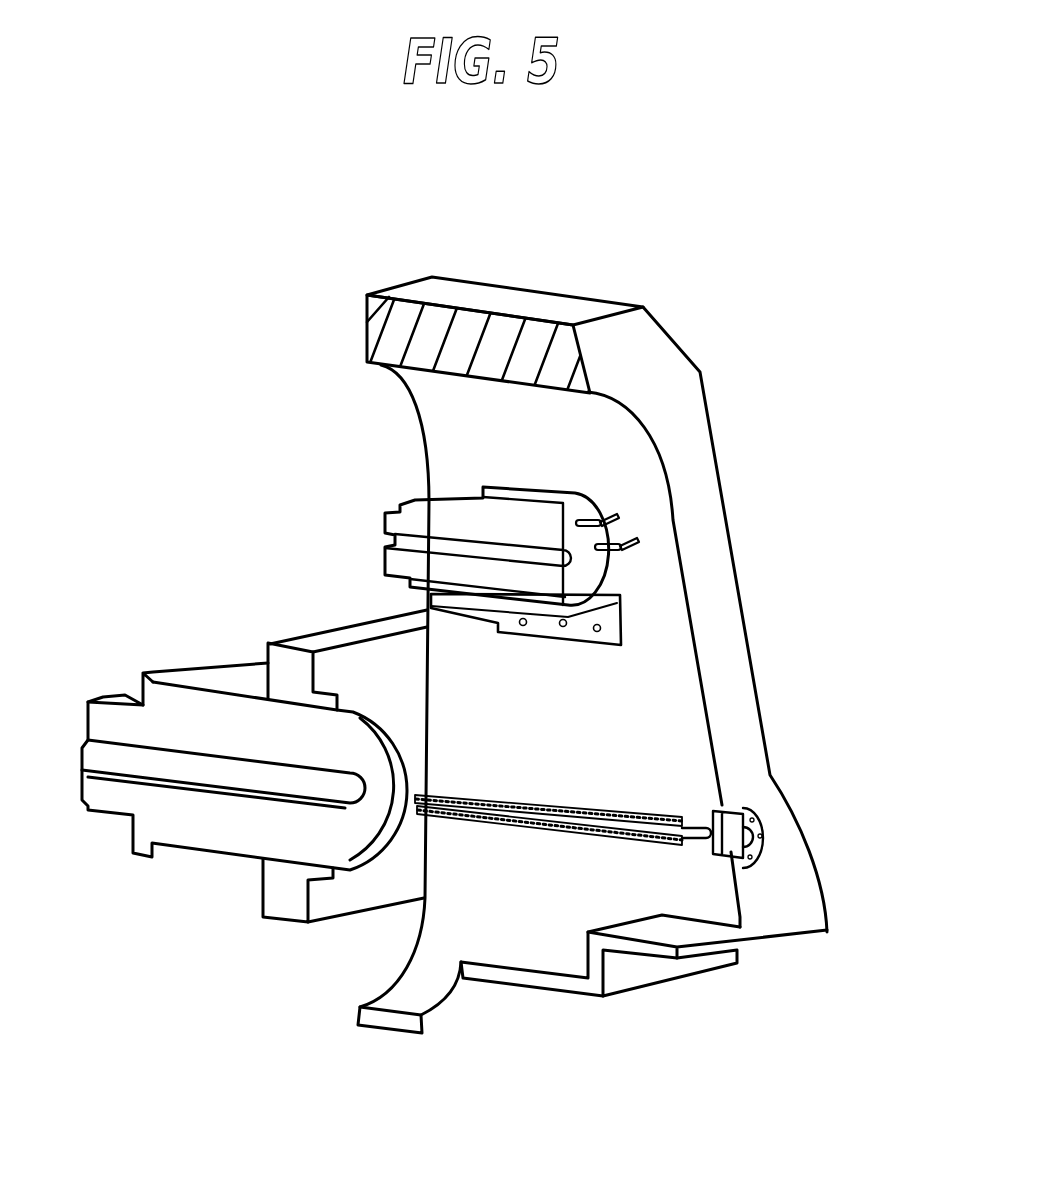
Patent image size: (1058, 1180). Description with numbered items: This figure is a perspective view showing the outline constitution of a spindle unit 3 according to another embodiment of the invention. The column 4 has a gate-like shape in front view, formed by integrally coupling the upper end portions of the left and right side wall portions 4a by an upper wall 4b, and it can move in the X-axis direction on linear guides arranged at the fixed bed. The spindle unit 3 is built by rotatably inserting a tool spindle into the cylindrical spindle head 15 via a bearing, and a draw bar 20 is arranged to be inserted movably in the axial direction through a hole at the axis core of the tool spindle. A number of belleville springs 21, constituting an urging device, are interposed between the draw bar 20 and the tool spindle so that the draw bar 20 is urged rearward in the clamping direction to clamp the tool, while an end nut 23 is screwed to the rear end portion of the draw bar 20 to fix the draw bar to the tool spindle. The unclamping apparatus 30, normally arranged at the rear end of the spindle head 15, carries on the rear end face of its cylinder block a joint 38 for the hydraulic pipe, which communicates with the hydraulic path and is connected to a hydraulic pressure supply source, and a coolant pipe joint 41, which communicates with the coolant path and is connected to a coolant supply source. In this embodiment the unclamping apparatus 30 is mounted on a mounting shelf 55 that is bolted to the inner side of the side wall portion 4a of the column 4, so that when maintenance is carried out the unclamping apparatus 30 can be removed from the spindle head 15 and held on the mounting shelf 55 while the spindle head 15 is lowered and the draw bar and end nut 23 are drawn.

The spindle unit 3 is at (242, 744).
The spindle head 15 is at (185, 668).
The column 4 is at (611, 615).
The side wall portion 4a is at (760, 714).
The upper wall 4b is at (463, 292).
The unclamping apparatus 30 is at (388, 485).
The joint for the hydraulic pipe 38 is at (610, 516).
The coolant pipe joint 41 is at (634, 540).
The mounting shelf 55 is at (642, 628).
The draw bar 20 is at (693, 842).
The belleville springs 21 is at (530, 828).
The end nut 23 is at (765, 833).